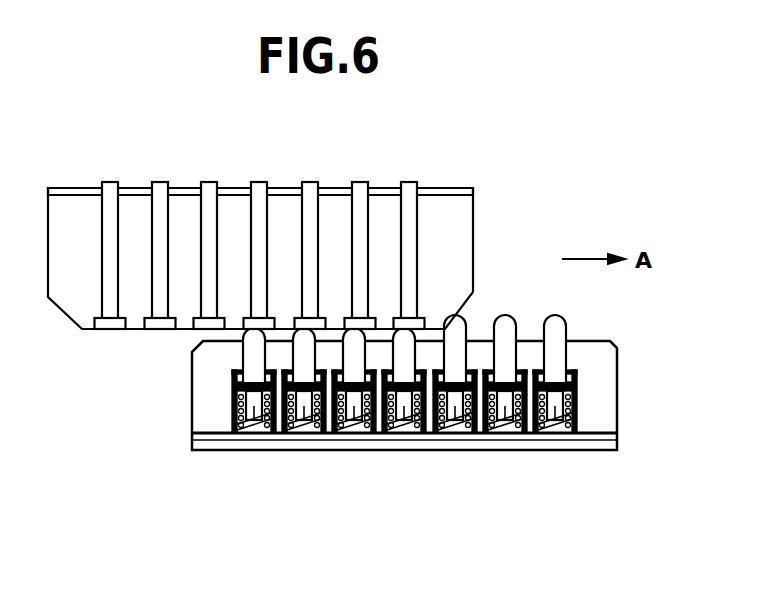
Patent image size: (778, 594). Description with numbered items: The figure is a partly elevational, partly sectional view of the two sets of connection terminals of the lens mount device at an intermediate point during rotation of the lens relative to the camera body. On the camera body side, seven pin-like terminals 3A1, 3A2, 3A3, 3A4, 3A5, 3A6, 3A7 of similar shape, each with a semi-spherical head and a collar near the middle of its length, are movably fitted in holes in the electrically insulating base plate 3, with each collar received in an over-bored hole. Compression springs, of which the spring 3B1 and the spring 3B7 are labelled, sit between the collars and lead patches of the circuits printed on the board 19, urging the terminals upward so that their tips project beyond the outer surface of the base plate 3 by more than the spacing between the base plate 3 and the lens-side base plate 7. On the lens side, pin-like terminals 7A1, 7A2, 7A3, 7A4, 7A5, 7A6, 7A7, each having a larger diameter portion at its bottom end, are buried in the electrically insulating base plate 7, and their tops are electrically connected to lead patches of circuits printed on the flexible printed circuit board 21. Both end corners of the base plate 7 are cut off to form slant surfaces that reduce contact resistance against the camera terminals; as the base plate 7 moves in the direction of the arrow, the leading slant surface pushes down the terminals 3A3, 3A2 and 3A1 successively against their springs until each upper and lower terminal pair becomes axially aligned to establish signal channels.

The base plate 3 is at (610, 392).
The board 19 is at (618, 437).
The terminal 3A1 is at (560, 428).
The terminal 3A2 is at (507, 428).
The terminal 3A3 is at (455, 428).
The terminal 3A4 is at (408, 425).
The terminal 3A5 is at (355, 425).
The terminal 3A6 is at (305, 425).
The terminal 3A7 is at (255, 425).
The compression spring 3B1 is at (570, 442).
The compression spring 3B7 is at (233, 428).
The base plate 7 is at (462, 232).
The flexible printed circuit board 21 is at (460, 186).
The terminal 7A1 is at (408, 182).
The terminal 7A2 is at (358, 182).
The terminal 7A3 is at (310, 182).
The terminal 7A4 is at (260, 182).
The terminal 7A5 is at (210, 182).
The terminal 7A6 is at (160, 182).
The terminal 7A7 is at (108, 182).